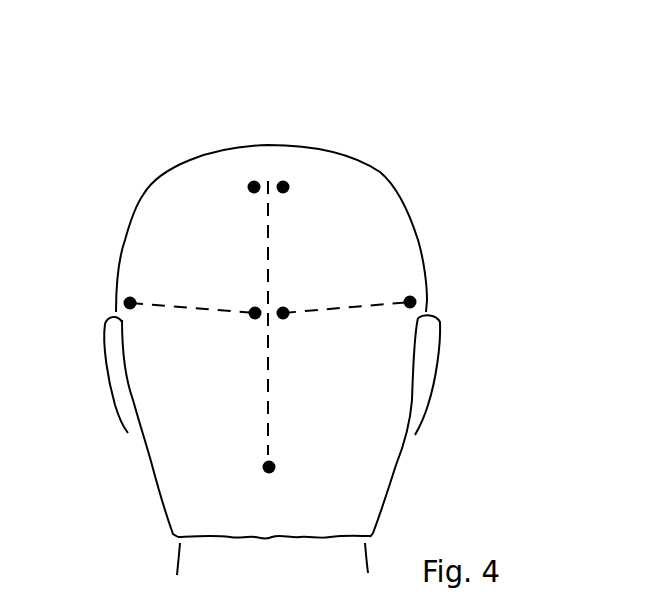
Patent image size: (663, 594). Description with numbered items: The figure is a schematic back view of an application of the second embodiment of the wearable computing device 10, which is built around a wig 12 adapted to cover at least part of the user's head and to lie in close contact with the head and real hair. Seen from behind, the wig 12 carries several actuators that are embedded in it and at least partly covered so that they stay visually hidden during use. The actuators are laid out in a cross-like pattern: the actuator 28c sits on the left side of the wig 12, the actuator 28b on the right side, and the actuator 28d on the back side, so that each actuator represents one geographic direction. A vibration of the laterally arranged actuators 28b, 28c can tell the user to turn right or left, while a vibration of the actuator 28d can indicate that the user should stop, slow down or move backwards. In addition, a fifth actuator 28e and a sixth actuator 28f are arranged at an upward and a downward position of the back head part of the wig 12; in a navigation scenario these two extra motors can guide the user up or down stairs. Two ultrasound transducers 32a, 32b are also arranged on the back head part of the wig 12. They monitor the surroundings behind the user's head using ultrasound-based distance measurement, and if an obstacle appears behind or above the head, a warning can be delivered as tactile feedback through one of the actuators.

The wearable computing device 10 is at (452, 145).
The wig 12 is at (377, 227).
The actuator 28b is at (412, 301).
The actuator 28c is at (128, 301).
The actuator 28d is at (255, 315).
The fifth actuator 28e is at (254, 184).
The sixth actuator 28f is at (272, 463).
The ultrasound transducer 32a is at (283, 185).
The ultrasound transducer 32b is at (284, 312).